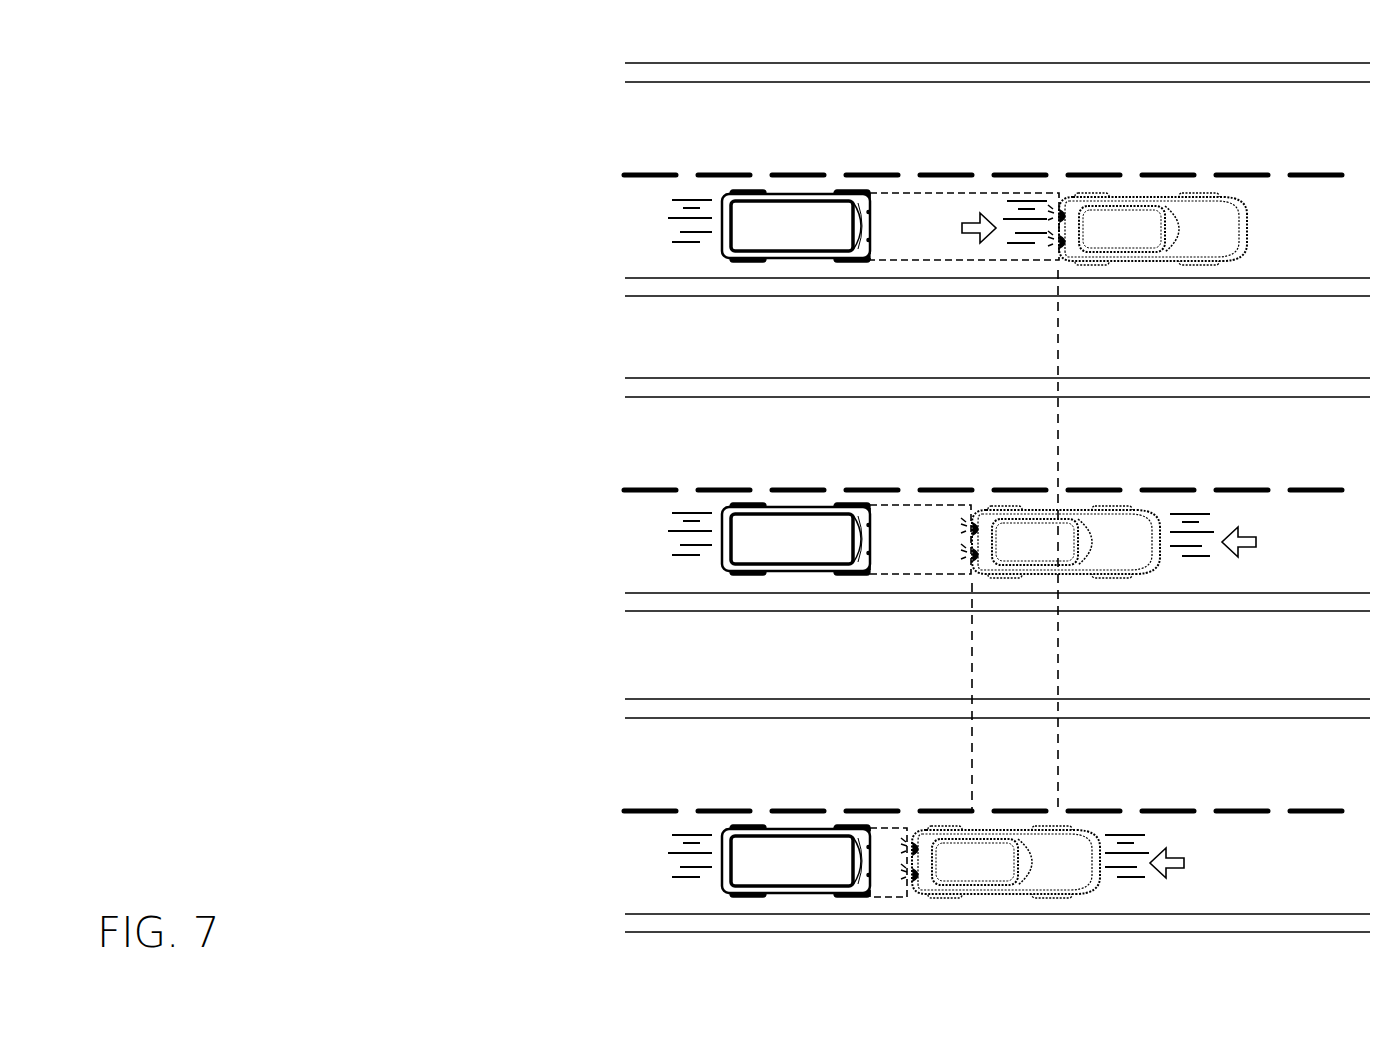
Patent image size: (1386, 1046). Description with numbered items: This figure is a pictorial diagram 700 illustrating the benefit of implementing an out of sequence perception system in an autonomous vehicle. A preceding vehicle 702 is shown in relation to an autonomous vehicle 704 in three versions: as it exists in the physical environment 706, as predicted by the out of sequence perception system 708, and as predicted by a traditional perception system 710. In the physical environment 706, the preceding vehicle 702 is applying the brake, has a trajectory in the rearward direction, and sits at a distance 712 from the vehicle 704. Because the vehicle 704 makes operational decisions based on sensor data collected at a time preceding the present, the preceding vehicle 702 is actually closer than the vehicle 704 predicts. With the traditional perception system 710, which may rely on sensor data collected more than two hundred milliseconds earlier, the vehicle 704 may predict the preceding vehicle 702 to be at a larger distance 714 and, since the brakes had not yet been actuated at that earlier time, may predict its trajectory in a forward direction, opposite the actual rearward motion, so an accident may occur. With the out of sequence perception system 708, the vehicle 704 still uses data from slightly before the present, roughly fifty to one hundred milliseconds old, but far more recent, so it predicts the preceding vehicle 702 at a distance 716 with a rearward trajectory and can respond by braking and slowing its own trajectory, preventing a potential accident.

The pictorial diagram 700 is at (207, 84).
The preceding vehicle 702 is at (1078, 545).
The autonomous vehicle 704 is at (769, 543).
The physical environment 706 is at (530, 687).
The out of sequence perception system 708 is at (530, 365).
The traditional perception system 710 is at (530, 45).
The distance 712 is at (867, 800).
The distance 714 is at (868, 170).
The distance 716 is at (972, 483).